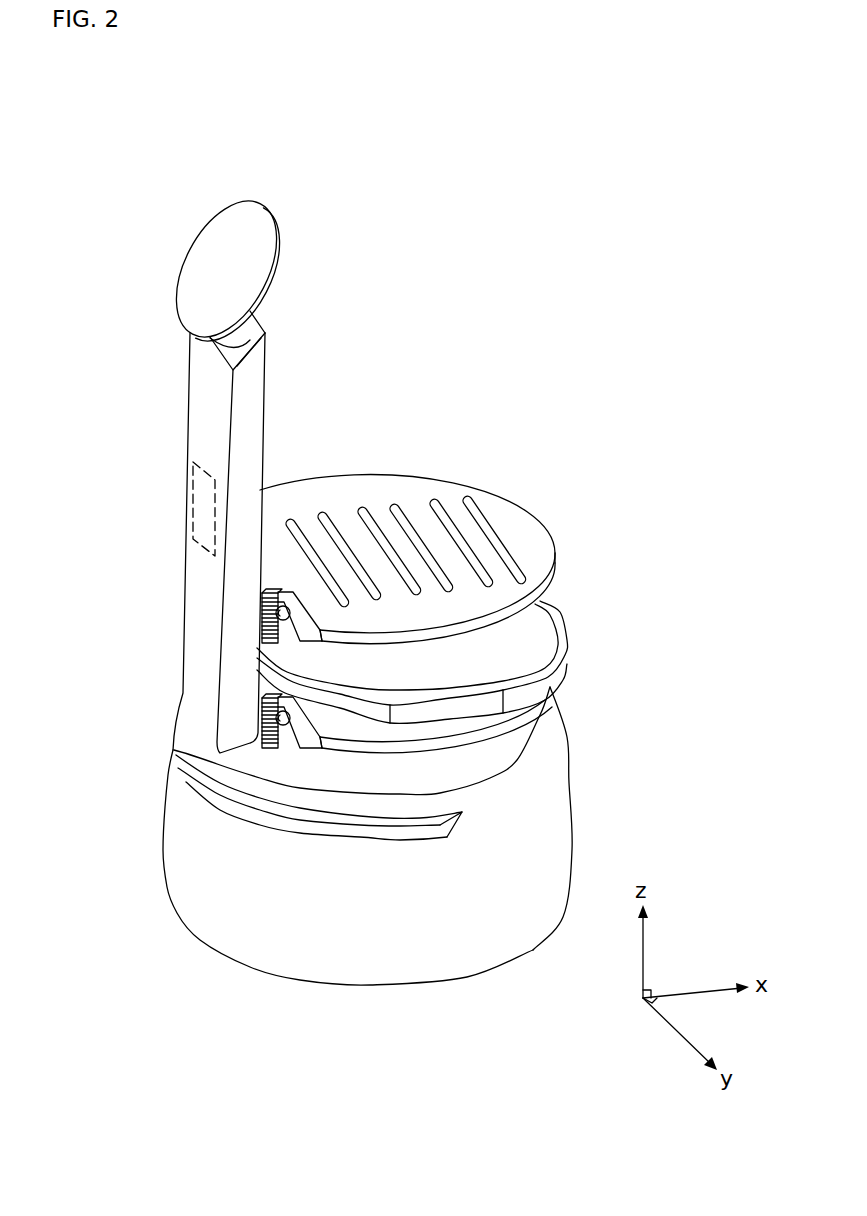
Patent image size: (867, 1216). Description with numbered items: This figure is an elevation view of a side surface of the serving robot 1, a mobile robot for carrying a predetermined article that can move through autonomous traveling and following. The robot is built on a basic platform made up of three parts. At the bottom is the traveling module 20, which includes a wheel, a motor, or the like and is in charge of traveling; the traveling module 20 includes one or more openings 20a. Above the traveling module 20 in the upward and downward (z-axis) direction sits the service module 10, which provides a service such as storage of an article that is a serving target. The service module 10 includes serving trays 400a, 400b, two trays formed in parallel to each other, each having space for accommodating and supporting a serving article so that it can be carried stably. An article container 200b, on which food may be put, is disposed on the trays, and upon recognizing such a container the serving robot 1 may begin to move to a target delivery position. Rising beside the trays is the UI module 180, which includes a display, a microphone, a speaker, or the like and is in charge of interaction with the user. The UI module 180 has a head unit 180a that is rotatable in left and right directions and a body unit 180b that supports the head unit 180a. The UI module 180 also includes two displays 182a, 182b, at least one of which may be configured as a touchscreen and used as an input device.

The serving robot 1 is at (488, 393).
The service module 10 is at (577, 522).
The traveling module 20 is at (577, 710).
The opening 20a is at (366, 832).
The UI module 180 is at (260, 192).
The head unit 180a is at (278, 217).
The body unit 180b is at (262, 385).
The display 182a is at (223, 263).
The display 182b is at (207, 509).
The article container 200b is at (562, 664).
The serving tray 400a is at (517, 533).
The serving tray 400b is at (540, 701).